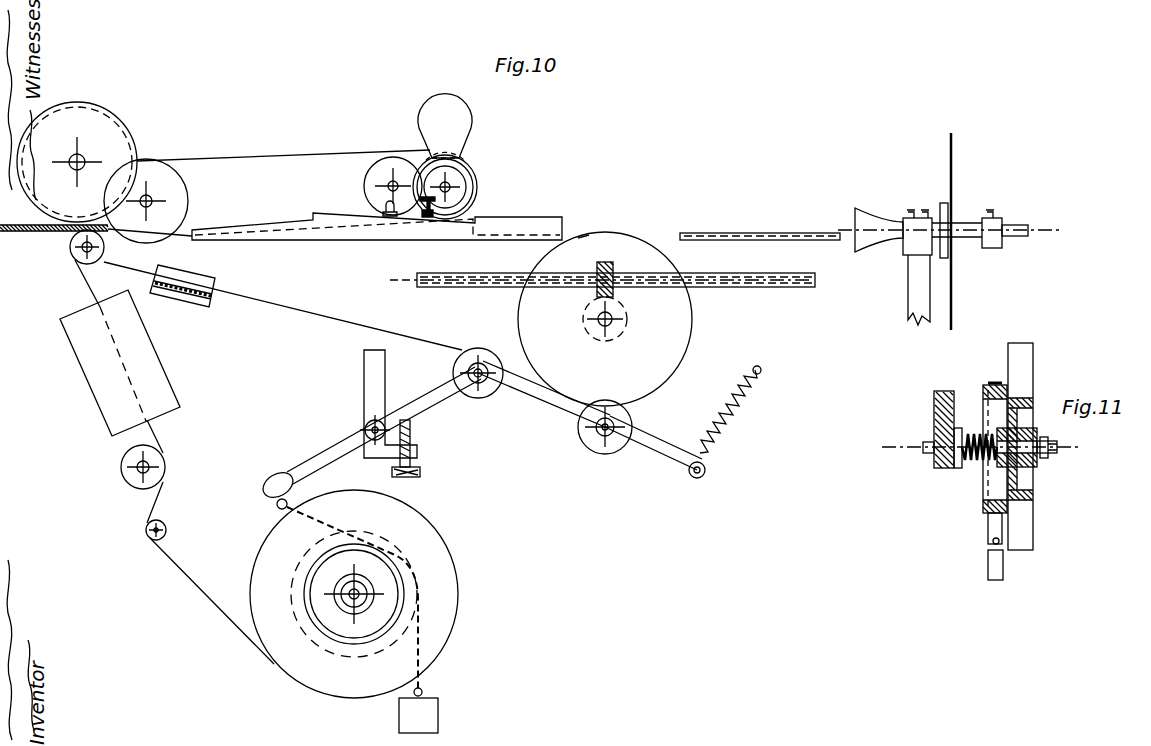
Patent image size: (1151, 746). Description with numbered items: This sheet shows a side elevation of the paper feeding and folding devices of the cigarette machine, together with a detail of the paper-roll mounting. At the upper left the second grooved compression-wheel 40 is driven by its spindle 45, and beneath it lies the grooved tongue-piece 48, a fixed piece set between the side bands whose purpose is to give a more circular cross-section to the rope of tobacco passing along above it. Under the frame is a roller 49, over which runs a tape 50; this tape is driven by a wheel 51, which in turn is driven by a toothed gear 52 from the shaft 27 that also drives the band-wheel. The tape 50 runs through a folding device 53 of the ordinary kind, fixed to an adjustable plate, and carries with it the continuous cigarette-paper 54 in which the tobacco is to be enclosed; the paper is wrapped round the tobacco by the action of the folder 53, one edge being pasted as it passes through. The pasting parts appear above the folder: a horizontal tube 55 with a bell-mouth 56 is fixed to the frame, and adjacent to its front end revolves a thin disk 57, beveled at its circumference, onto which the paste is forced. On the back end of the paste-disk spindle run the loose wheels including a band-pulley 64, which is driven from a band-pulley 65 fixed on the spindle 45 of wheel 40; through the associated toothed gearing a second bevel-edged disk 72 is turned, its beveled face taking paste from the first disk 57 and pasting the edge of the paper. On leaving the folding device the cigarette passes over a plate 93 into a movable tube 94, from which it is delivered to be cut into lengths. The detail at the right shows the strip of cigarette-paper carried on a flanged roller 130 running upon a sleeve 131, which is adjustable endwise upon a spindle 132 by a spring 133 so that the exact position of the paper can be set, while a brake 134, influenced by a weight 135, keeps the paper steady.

In FIG. 10, the second grooved wheel 40 is at (120, 112).
In FIG. 10, the spindle 45 is at (146, 201).
In FIG. 10, the grooved tongue-piece 48 is at (32, 225).
In FIG. 10, the roller 49 is at (70, 247).
In FIG. 10, the tape 50 is at (312, 312).
In FIG. 10, the wheel 51 is at (684, 346).
In FIG. 10, the toothed gear 52 is at (590, 296).
In FIG. 10, the folding device 53 is at (382, 240).
In FIG. 10, the continuous cigarette-paper 54 is at (80, 285).
In FIG. 10, the horizontal tube 55 is at (419, 112).
In FIG. 10, the bell-mouth 56 is at (466, 148).
In FIG. 10, the thin disk 57 is at (472, 194).
In FIG. 10, the band-pulley 64 is at (478, 182).
In FIG. 10, the band-pulley 65 is at (182, 176).
In FIG. 10, the second bevel-edged wheel or disk 72 is at (366, 178).
In FIG. 10, the shaft 27 is at (725, 290).
In FIG. 10, the plate 93 is at (780, 233).
In FIG. 10, the movable tube 94 is at (893, 220).
In FIG. 11, the flanged roller 130 is at (1036, 486).
In FIG. 11, the sleeve 131 is at (993, 472).
In FIG. 11, the spindle 132 is at (1050, 452).
In FIG. 11, the spring 133 is at (972, 458).
In FIG. 11, the brake 134 is at (984, 386).
In FIG. 11, the weight 135 is at (1005, 565).